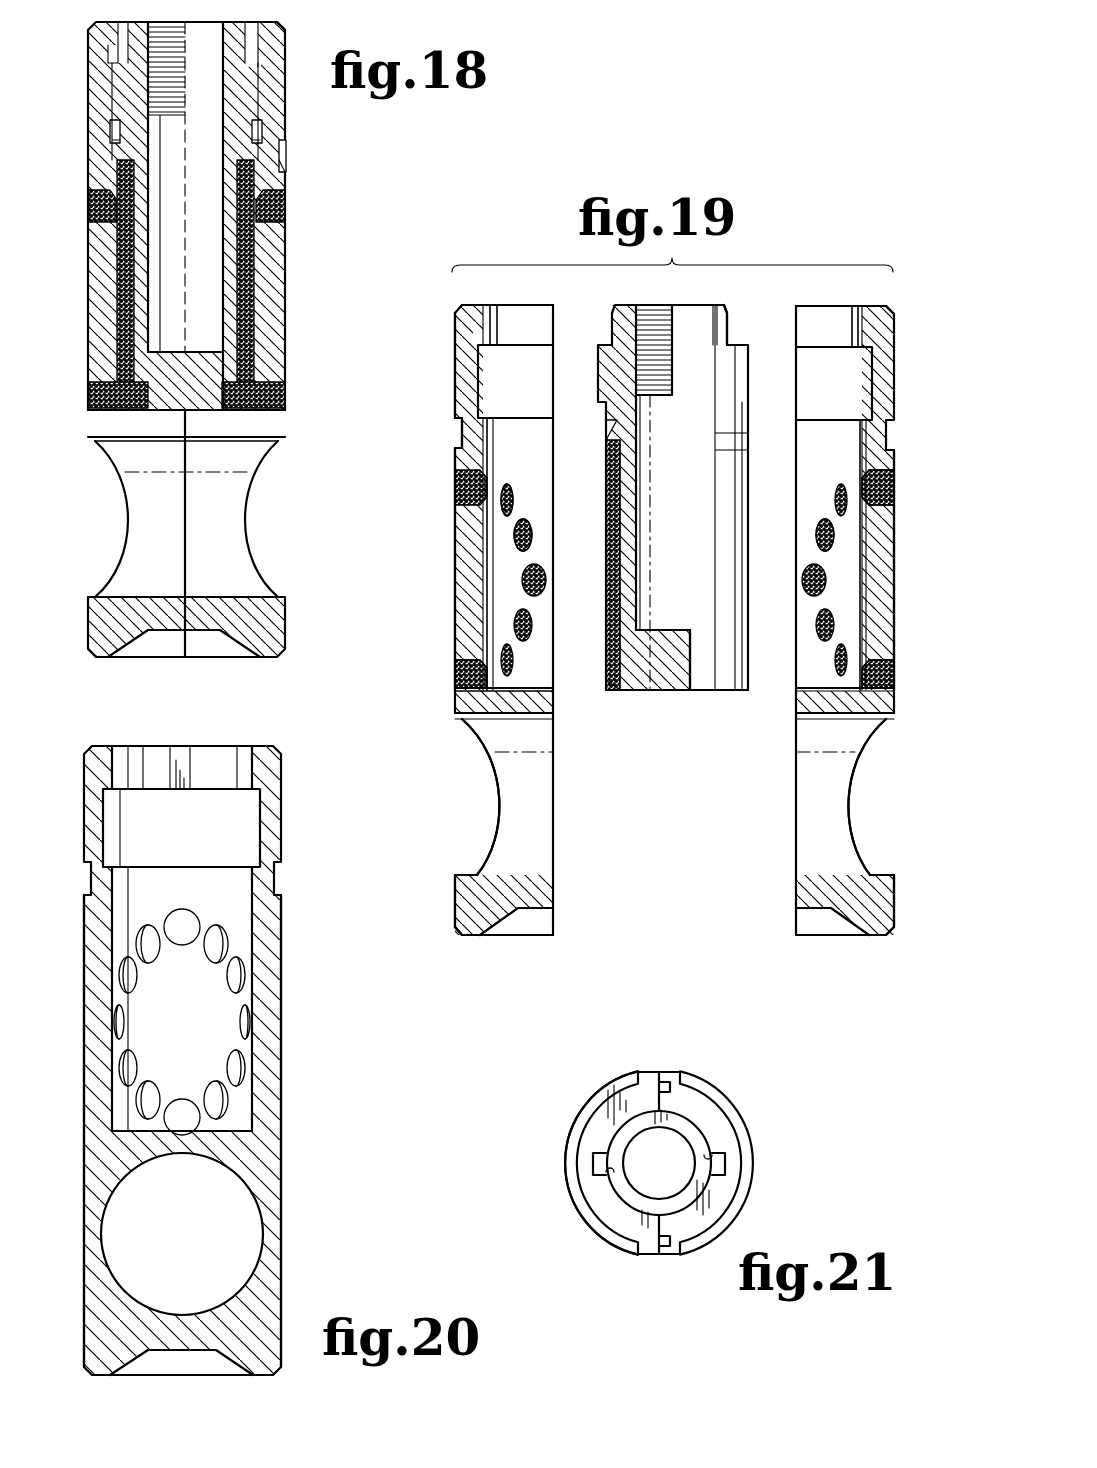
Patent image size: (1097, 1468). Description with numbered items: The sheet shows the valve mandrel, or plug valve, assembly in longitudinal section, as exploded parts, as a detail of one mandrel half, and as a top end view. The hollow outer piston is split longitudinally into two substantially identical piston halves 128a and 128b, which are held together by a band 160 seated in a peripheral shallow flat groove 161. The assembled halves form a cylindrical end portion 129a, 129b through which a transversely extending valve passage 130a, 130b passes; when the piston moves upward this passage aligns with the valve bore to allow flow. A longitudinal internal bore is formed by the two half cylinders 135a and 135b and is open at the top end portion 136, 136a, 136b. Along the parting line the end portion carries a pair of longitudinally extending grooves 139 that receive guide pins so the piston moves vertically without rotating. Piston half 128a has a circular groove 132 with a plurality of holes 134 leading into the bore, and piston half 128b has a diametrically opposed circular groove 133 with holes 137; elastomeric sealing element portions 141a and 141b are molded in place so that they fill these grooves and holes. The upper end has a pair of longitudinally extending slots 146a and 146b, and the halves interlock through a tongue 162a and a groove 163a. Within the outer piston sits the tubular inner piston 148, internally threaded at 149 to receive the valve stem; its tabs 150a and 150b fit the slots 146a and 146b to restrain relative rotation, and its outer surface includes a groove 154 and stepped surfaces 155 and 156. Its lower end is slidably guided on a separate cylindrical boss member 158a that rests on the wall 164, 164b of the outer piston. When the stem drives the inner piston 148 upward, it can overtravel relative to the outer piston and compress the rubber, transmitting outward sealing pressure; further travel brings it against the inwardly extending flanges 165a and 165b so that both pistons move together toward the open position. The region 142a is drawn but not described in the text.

In FIG. 19, the piston half 128a is at (905, 515).
In FIG. 19, the piston half 128b is at (440, 512).
In FIG. 21, the piston half 128b is at (567, 1136).
In FIG. 19, the cylindrical end portion 129a is at (890, 938).
In FIG. 19, the cylindrical end portion 129b is at (455, 905).
In FIG. 19, the valve passage 130a is at (856, 855).
In FIG. 19, the valve passage 130b is at (470, 850).
In FIG. 19, the circular groove 132 is at (868, 690).
In FIG. 19, the circular groove 133 is at (465, 676).
In FIG. 19, the holes 134 is at (857, 473).
In FIG. 19, the half cylinder 135a is at (858, 582).
In FIG. 19, the half cylinder 135b is at (490, 540).
In FIG. 18, the top end portion 136 is at (266, 24).
In FIG. 19, the top end portion 136a is at (872, 305).
In FIG. 19, the top end portion 136b is at (480, 305).
In FIG. 19, the holes 137 is at (520, 455).
In FIG. 20, the longitudinally extending grooves 139 is at (88, 1097).
In FIG. 21, the longitudinally extending grooves 139 is at (652, 1070).
In FIG. 19, the sealing element portion 141a is at (819, 535).
In FIG. 19, the sealing element portion 141b is at (541, 537).
In FIG. 19, the recess 142a is at (615, 645).
In FIG. 19, the longitudinally extending slot 146a is at (850, 335).
In FIG. 21, the longitudinally extending slot 146a is at (712, 1155).
In FIG. 19, the longitudinally extending slot 146b is at (493, 316).
In FIG. 21, the longitudinally extending slot 146b is at (606, 1178).
In FIG. 18, the inner piston 148 is at (250, 108).
In FIG. 19, the inner piston 148 is at (712, 673).
In FIG. 18, the internal threads 149 is at (125, 42).
In FIG. 19, the tab 150a is at (727, 312).
In FIG. 21, the tab 150a is at (728, 1165).
In FIG. 21, the tab 150b is at (594, 1162).
In FIG. 19, the groove 154 is at (610, 468).
In FIG. 19, the stepped surface 155 is at (612, 503).
In FIG. 19, the stepped surface 156 is at (617, 600).
In FIG. 18, the cylindrical boss member 158a is at (203, 358).
In FIG. 19, the cylindrical boss member 158a is at (648, 673).
In FIG. 18, the band 160 is at (283, 170).
In FIG. 18, the peripheral shallow flat groove 161 is at (283, 150).
In FIG. 19, the peripheral shallow flat groove 161 is at (457, 432).
In FIG. 20, the peripheral shallow flat groove 161 is at (282, 860).
In FIG. 21, the tongue 162a is at (662, 1256).
In FIG. 21, the groove 163a is at (668, 1072).
In FIG. 18, the wall 164 is at (188, 405).
In FIG. 19, the wall 164b is at (547, 677).
In FIG. 19, the inwardly extending flange 165a is at (875, 345).
In FIG. 18, the inwardly extending flange 165b is at (113, 50).
In FIG. 19, the inwardly extending flange 165b is at (483, 330).